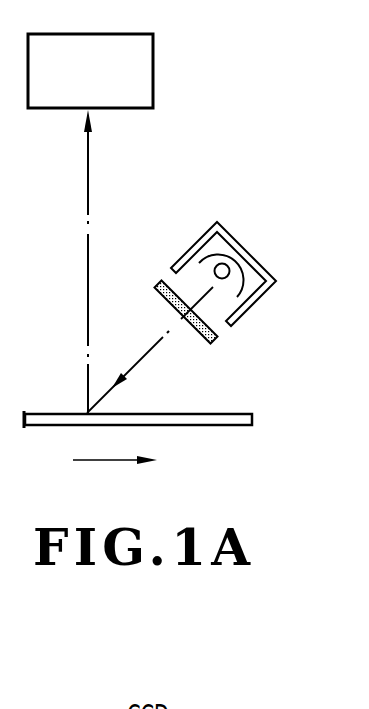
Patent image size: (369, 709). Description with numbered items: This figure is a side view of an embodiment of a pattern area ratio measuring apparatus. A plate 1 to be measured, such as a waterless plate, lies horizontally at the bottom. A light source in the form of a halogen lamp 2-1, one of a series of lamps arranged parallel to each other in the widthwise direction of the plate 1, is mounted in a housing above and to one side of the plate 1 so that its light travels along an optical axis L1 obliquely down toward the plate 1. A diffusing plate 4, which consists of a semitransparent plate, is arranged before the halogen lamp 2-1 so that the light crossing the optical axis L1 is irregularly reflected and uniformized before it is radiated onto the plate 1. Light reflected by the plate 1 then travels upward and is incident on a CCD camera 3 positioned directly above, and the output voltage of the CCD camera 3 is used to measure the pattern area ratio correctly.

The plate to be measured 1 is at (53, 412).
The light source (halogen lamp) 2-1 is at (200, 249).
The CCD camera 3 is at (153, 52).
The diffusing plate 4 is at (163, 302).
The optical axis L1 is at (143, 357).